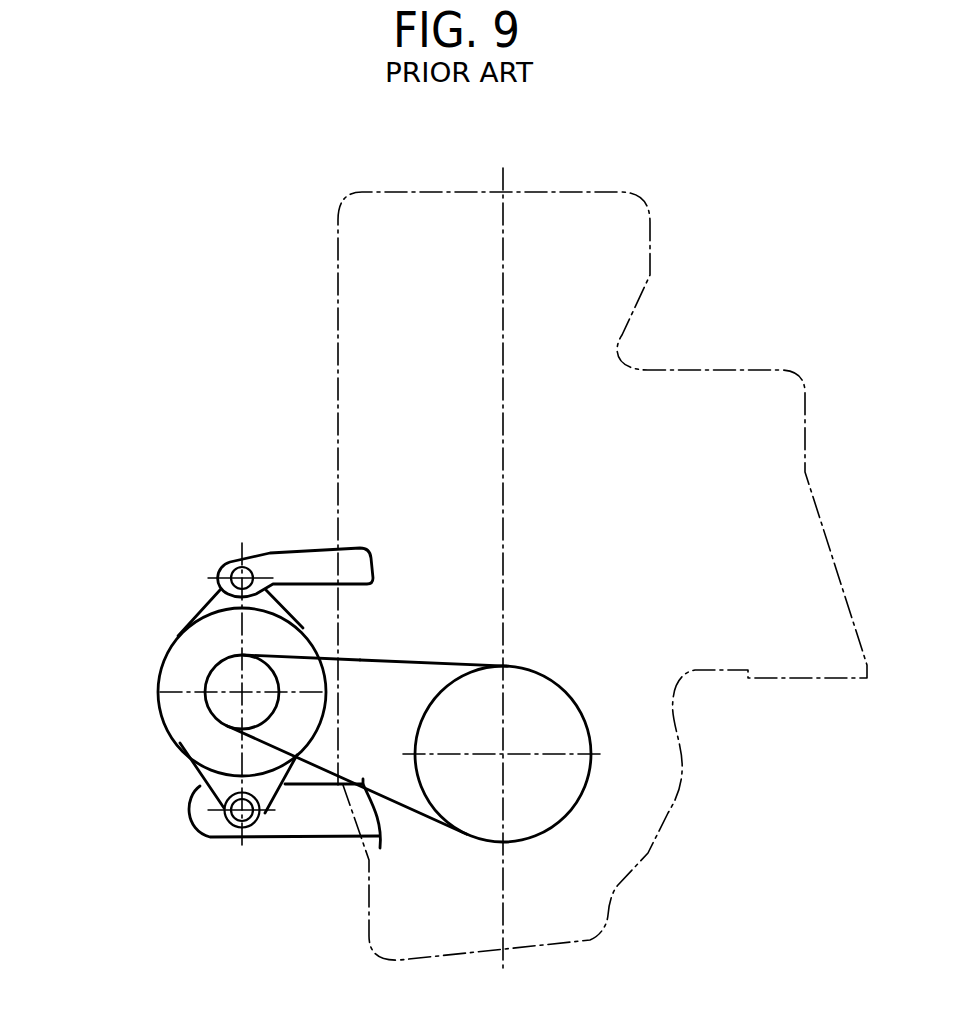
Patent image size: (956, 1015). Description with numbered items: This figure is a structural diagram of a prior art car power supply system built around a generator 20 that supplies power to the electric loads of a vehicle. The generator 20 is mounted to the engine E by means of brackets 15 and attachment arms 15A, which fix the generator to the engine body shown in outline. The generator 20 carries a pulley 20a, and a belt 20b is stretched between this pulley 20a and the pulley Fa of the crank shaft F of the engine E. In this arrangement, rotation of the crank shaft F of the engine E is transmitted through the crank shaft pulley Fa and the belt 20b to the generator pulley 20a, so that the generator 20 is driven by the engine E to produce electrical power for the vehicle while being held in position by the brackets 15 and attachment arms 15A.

The bracket 15 is at (200, 607).
The attachment arm 15A is at (270, 552).
The generator 20 is at (173, 742).
The pulley 20a is at (213, 665).
The belt 20b is at (360, 660).
The crank shaft F is at (555, 710).
The pulley Fa is at (447, 687).
The engine E is at (637, 849).